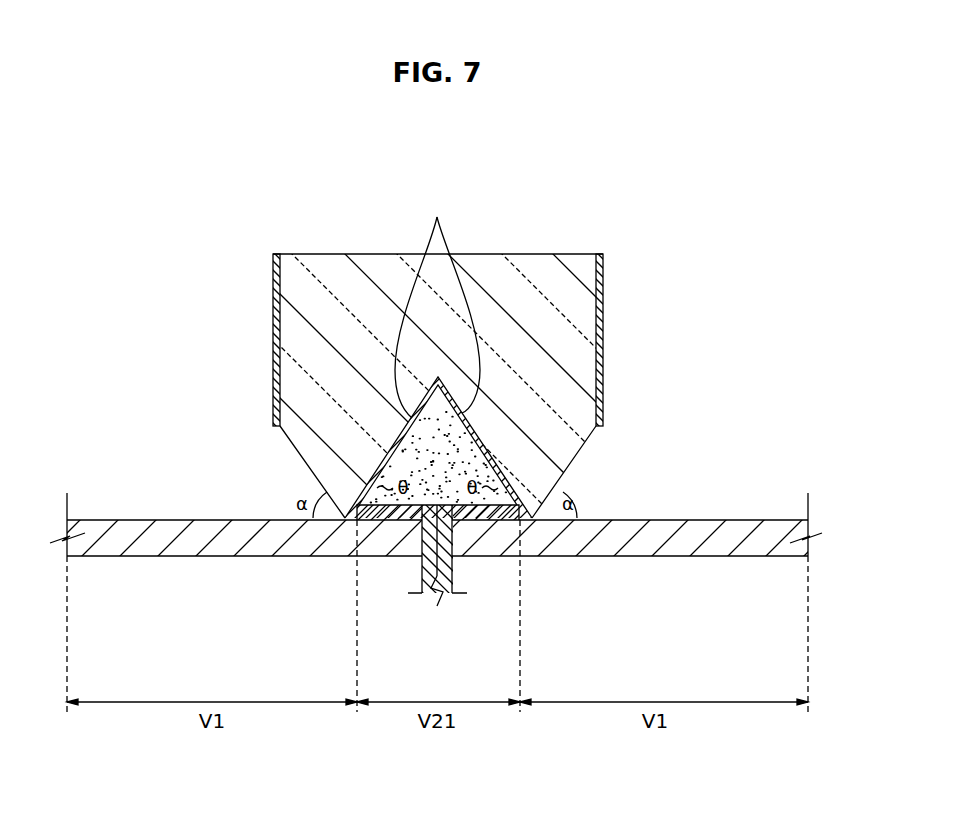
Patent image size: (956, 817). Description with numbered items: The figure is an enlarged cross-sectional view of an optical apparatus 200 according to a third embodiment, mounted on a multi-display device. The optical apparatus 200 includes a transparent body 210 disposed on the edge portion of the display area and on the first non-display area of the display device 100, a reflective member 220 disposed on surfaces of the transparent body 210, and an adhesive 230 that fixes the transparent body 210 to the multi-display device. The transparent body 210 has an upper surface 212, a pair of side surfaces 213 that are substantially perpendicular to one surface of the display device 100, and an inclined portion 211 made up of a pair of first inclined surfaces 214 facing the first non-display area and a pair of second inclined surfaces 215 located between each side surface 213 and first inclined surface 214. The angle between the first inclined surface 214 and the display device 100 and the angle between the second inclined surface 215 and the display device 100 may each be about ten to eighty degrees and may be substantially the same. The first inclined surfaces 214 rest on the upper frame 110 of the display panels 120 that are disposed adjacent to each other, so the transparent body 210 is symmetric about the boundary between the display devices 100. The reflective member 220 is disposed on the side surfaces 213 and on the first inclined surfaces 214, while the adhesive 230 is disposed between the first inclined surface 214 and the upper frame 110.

The display device 100 is at (440, 569).
The upper frame 110 is at (422, 565).
The display panel 120 is at (197, 543).
The optical apparatus 200 is at (464, 337).
The transparent body 210 is at (565, 342).
The inclined portion 211 is at (437, 445).
The upper surface 212 is at (332, 254).
The side surface 213 is at (280, 284).
The first inclined surface 214 is at (375, 472).
The second inclined surface 215 is at (299, 452).
The reflective member 220 is at (437, 217).
The adhesive 230 is at (452, 457).